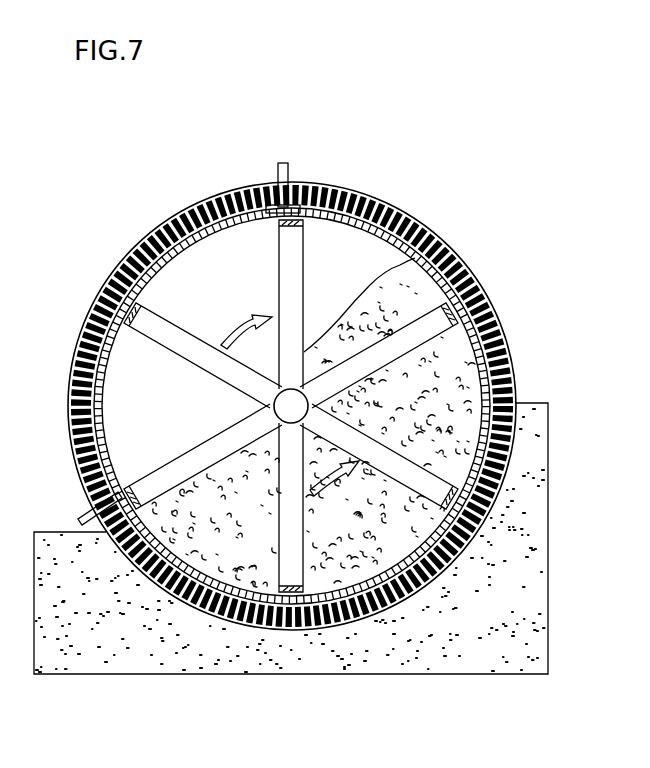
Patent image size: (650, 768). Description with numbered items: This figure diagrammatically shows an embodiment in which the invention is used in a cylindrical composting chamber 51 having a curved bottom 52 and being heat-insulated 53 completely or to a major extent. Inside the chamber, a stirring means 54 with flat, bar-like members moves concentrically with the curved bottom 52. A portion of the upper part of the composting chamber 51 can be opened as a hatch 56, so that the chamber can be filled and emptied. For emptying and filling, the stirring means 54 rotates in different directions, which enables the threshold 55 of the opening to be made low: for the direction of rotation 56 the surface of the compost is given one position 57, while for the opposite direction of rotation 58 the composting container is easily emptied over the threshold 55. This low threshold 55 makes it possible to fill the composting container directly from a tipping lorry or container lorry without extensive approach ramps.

The composting chamber 51 is at (340, 247).
The curved bottom 52 is at (345, 586).
The heat insulation 53 is at (193, 207).
The stirring means 54 is at (311, 281).
The threshold 55 is at (118, 483).
The hatch 56 is at (83, 338).
The compost surface position 57 is at (153, 492).
The opposite direction of rotation 58 is at (234, 330).